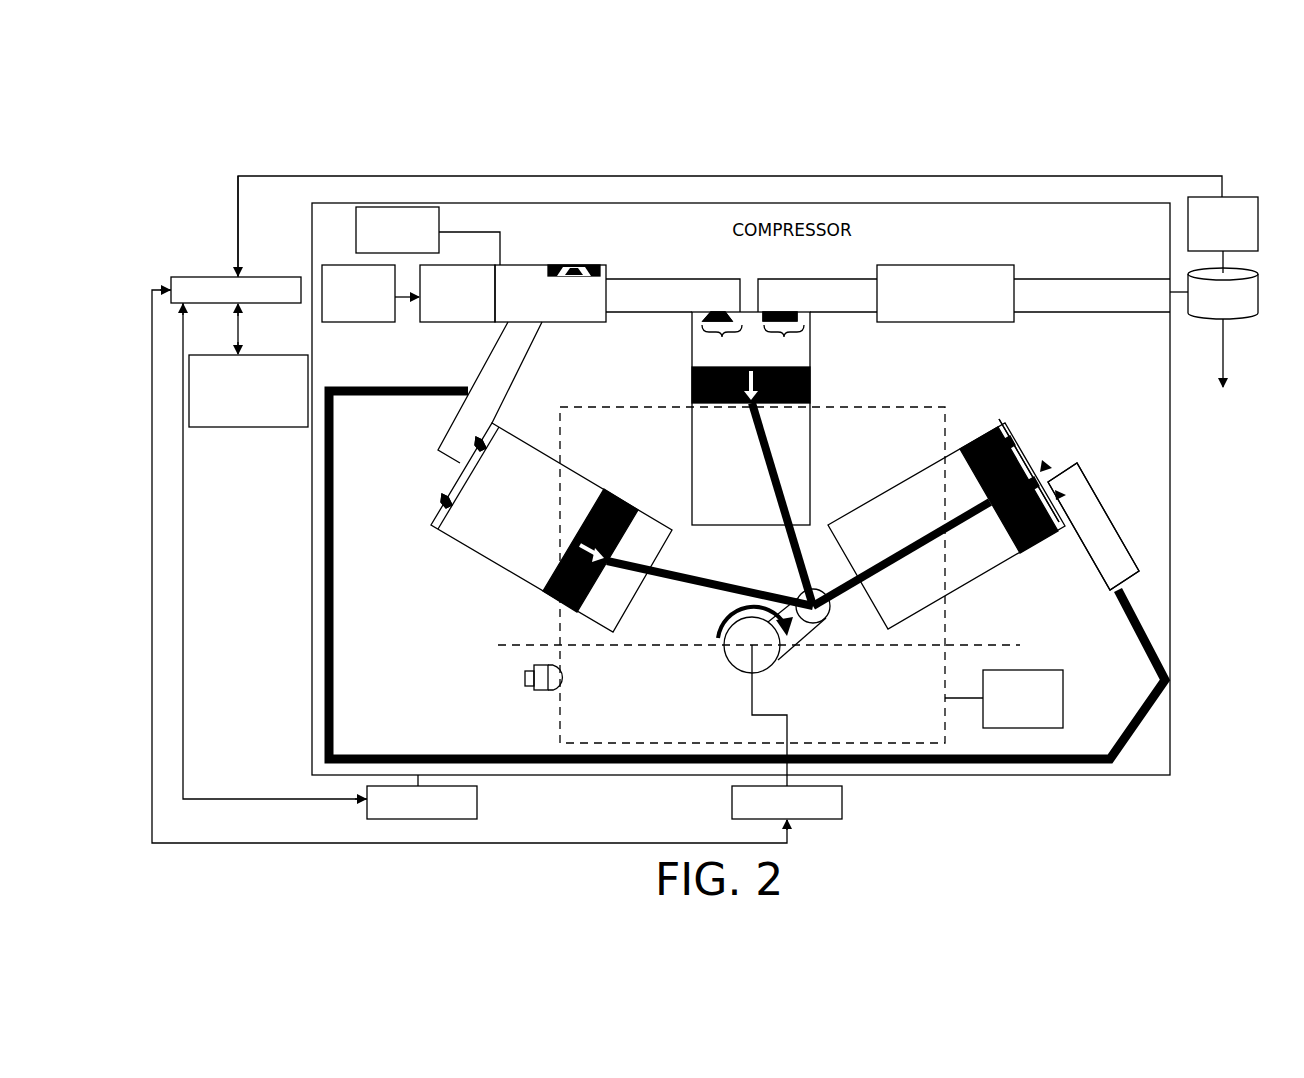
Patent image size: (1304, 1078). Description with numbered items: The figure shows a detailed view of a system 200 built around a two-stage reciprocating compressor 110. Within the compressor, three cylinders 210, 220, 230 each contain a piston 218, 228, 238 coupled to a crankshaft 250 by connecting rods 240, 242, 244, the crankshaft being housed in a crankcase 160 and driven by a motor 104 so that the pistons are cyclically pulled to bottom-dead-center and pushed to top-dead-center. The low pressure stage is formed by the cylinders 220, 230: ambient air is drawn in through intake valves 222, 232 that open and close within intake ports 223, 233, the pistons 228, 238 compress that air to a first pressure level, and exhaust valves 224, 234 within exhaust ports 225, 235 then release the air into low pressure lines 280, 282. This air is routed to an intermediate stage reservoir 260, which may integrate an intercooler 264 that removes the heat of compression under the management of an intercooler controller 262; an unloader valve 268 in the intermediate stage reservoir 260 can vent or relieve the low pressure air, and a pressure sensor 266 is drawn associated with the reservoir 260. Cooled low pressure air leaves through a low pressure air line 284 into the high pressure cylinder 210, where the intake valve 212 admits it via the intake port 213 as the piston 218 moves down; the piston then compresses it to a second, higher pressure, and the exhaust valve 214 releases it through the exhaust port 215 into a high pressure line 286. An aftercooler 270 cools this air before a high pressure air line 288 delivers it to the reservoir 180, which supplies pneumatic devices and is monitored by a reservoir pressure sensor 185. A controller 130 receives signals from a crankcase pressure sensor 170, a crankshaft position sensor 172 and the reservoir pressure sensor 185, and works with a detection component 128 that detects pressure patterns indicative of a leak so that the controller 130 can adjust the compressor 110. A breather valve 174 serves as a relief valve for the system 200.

The system 200 is at (1158, 134).
The compressor 110 is at (997, 212).
The controller 130 is at (209, 277).
The detection component 128 is at (257, 354).
The motor 104 is at (477, 808).
The crankshaft position sensor 172 is at (842, 808).
The crankcase pressure sensor 170 is at (1018, 728).
The breather valve 174 is at (525, 678).
The reservoir pressure sensor 185 is at (1233, 197).
The reservoir 180 is at (1203, 318).
The crankcase 160 is at (900, 407).
The cylinder 210 is at (720, 490).
The intake valve 212 is at (716, 312).
The intake port 213 is at (722, 335).
The exhaust valve 214 is at (781, 312).
The exhaust port 215 is at (783, 335).
The piston 218 is at (691, 397).
The cylinder 220 is at (973, 556).
The intake valve 222 is at (1020, 440).
The intake port 223 is at (1006, 430).
The exhaust valve 224 is at (1070, 482).
The exhaust port 225 is at (1062, 548).
The piston 228 is at (1036, 543).
The cylinder 230 is at (505, 548).
The intake valve 232 is at (442, 500).
The intake port 233 is at (471, 512).
The exhaust valve 234 is at (470, 441).
The exhaust port 235 is at (505, 457).
The piston 238 is at (568, 607).
The connecting rod 240 is at (800, 545).
The connecting rod 242 is at (668, 577).
The connecting rod 244 is at (843, 593).
The crankshaft 250 is at (740, 661).
The intermediate stage reservoir 260 is at (552, 322).
The intercooler controller 262 is at (336, 265).
The intercooler 264 is at (462, 322).
The pressure sensor 266 is at (395, 207).
The unloader valve 268 is at (575, 266).
The aftercooler 270 is at (976, 270).
The low pressure line 280 is at (1150, 639).
The low pressure line 282 is at (486, 381).
The low pressure air line 284 is at (652, 279).
The high pressure line 286 is at (851, 288).
The high pressure air line 288 is at (1098, 288).